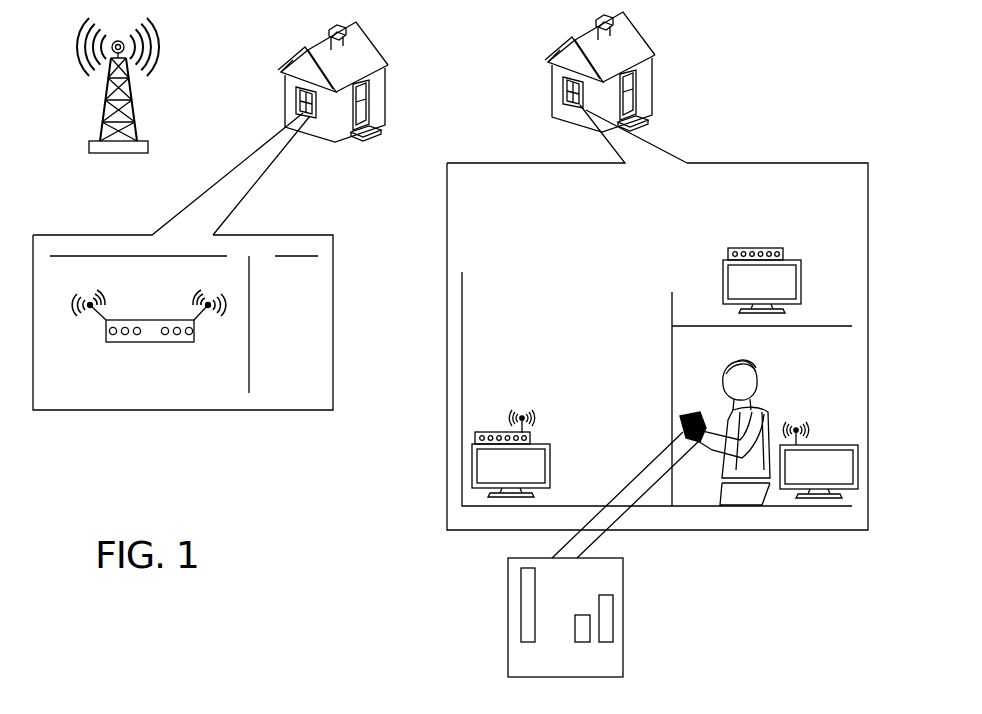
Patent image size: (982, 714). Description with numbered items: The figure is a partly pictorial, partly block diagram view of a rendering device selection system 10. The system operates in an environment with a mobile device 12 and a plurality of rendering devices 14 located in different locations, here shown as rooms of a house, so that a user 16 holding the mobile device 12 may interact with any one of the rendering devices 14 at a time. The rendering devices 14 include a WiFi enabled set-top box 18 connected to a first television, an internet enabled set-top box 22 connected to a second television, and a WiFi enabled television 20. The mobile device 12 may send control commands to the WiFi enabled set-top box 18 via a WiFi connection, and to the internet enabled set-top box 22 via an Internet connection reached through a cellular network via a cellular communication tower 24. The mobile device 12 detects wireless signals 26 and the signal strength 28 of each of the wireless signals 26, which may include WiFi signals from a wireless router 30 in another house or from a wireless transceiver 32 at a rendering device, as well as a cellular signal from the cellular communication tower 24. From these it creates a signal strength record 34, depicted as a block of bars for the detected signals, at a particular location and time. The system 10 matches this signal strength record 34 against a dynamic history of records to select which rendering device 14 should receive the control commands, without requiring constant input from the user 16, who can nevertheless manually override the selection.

The rendering device selection system 10 is at (812, 36).
The mobile device 12 is at (680, 422).
The rendering devices 14 is at (728, 256).
The user 16 is at (720, 362).
The WiFi enabled set-top box 18 is at (491, 432).
The WiFi enabled television 20 is at (822, 490).
The internet enabled set-top box 22 is at (735, 247).
The cellular communication tower 24 is at (141, 100).
The wireless signals 26 is at (532, 677).
The signal strength 28 is at (521, 582).
The wireless router 30 is at (150, 342).
The wireless transceiver 32 is at (522, 416).
The signal strength record 34 is at (508, 632).